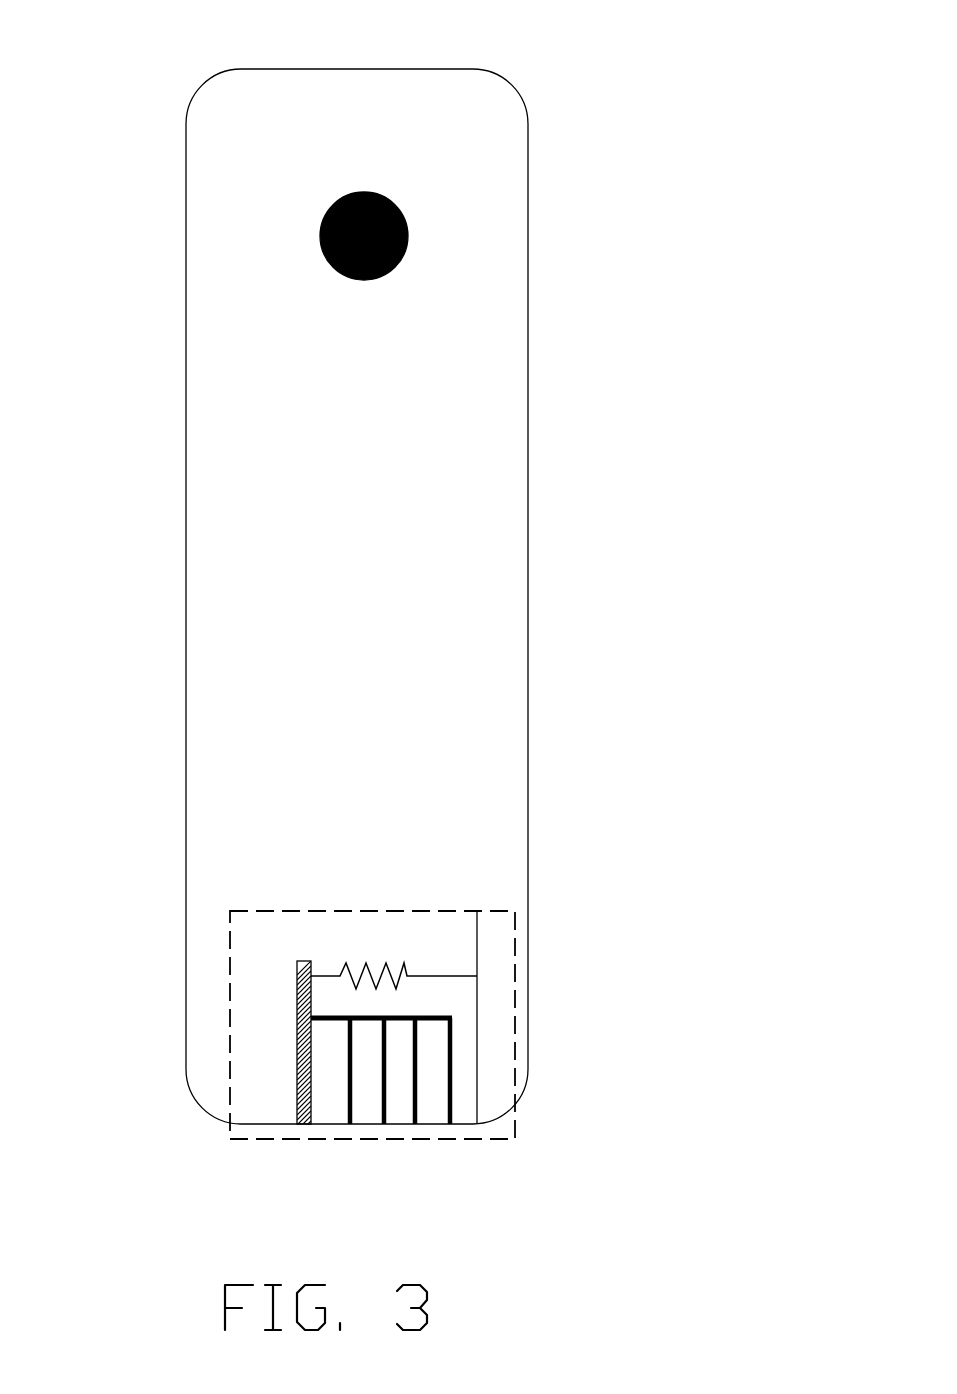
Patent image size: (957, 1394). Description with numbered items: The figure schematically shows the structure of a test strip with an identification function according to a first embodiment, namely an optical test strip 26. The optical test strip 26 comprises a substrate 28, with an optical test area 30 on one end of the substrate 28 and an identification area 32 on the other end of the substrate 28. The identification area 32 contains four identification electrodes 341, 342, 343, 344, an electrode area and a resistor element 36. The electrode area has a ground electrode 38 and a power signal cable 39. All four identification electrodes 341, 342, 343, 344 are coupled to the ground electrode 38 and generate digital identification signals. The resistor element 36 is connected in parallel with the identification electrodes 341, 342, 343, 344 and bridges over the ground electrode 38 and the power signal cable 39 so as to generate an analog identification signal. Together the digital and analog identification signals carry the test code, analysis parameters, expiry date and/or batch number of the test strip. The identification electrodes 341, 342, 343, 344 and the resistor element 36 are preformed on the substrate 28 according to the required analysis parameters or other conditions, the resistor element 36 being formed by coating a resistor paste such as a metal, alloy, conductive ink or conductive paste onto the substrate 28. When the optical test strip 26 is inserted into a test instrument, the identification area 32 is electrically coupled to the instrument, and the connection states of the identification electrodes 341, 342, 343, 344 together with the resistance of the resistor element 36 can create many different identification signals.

The optical test strip 26 is at (597, 210).
The substrate 28 is at (528, 627).
The optical test area 30 is at (362, 192).
The identification area 32 is at (515, 965).
The resistor element 36 is at (373, 965).
The ground electrode 38 is at (305, 961).
The power signal cable 39 is at (478, 945).
The identification electrode 341 is at (452, 1028).
The identification electrode 342 is at (415, 1090).
The identification electrode 343 is at (383, 1118).
The identification electrode 344 is at (347, 1097).